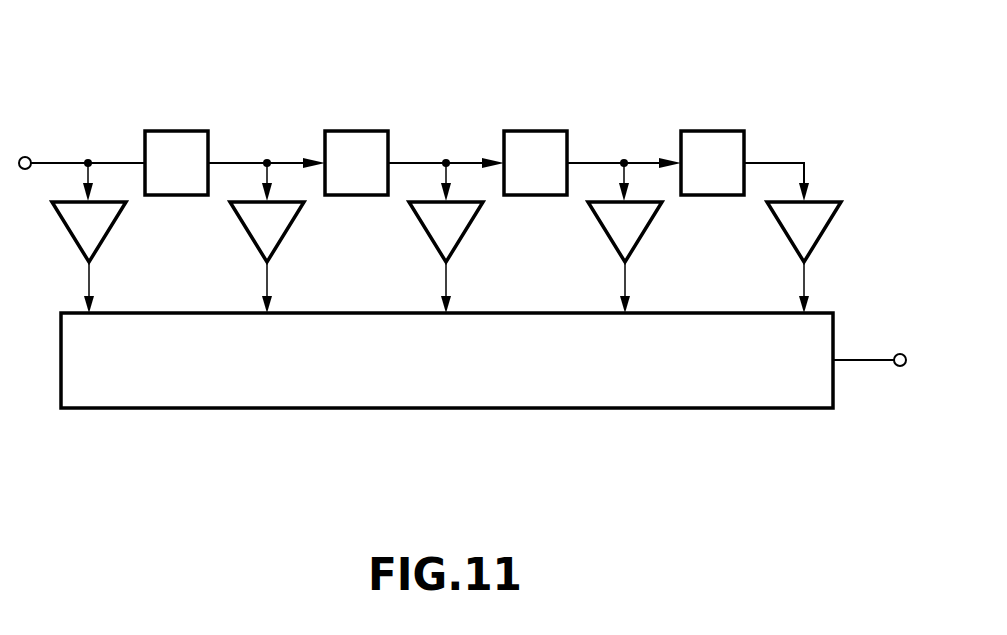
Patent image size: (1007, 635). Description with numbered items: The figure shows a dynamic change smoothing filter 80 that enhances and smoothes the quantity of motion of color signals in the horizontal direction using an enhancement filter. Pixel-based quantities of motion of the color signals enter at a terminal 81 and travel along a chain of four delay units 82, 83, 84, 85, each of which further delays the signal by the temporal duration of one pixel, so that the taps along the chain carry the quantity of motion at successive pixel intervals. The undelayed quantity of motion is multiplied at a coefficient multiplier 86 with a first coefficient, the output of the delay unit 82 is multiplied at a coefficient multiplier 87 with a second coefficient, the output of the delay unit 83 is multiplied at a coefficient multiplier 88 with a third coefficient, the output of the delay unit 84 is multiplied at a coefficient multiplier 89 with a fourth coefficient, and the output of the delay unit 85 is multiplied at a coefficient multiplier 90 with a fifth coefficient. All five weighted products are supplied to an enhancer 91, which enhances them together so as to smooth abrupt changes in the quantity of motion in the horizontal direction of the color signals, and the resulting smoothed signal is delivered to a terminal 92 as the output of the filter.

The dynamic change smoothing filter 80 is at (440, 105).
The terminal 81 is at (27, 156).
The delay unit 82 is at (176, 131).
The delay unit 83 is at (357, 131).
The delay unit 84 is at (534, 131).
The delay unit 85 is at (710, 131).
The coefficient multiplier 86 is at (101, 231).
The coefficient multiplier 87 is at (279, 231).
The coefficient multiplier 88 is at (458, 231).
The coefficient multiplier 89 is at (637, 231).
The coefficient multiplier 90 is at (816, 231).
The enhancer 91 is at (445, 410).
The terminal 92 is at (895, 355).